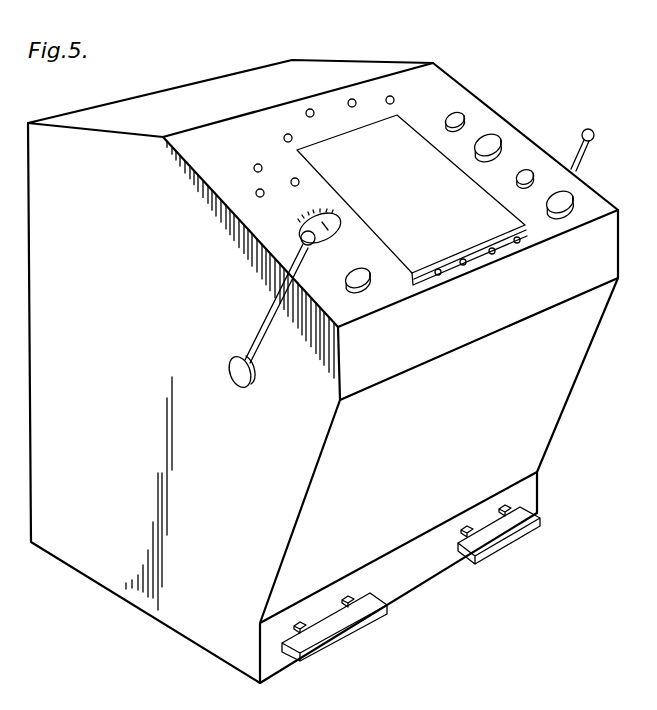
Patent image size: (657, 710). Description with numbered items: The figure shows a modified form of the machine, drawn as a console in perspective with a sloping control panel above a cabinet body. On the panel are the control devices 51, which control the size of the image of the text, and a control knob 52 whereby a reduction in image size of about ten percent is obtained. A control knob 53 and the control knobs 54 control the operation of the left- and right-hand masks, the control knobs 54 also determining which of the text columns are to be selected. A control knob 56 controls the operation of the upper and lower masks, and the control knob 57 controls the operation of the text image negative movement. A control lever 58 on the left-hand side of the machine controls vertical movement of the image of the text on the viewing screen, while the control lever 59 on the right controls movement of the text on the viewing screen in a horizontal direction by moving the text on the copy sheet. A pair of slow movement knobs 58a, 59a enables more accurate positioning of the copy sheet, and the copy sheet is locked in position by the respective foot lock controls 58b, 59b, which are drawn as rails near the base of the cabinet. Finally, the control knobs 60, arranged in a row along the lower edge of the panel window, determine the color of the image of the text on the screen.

The control devices 51 is at (287, 202).
The control knob 52 is at (255, 166).
The control knob 53 is at (393, 97).
The control knobs 54 is at (349, 101).
The control knob 56 is at (528, 170).
The control knob 57 is at (490, 142).
The control lever 58 is at (260, 340).
The slow movement knob 58a is at (368, 290).
The foot lock control 58b is at (345, 632).
The control lever 59 is at (581, 158).
The slow movement knob 59a is at (479, 305).
The foot lock control 59b is at (505, 545).
The control knobs 60 is at (441, 275).